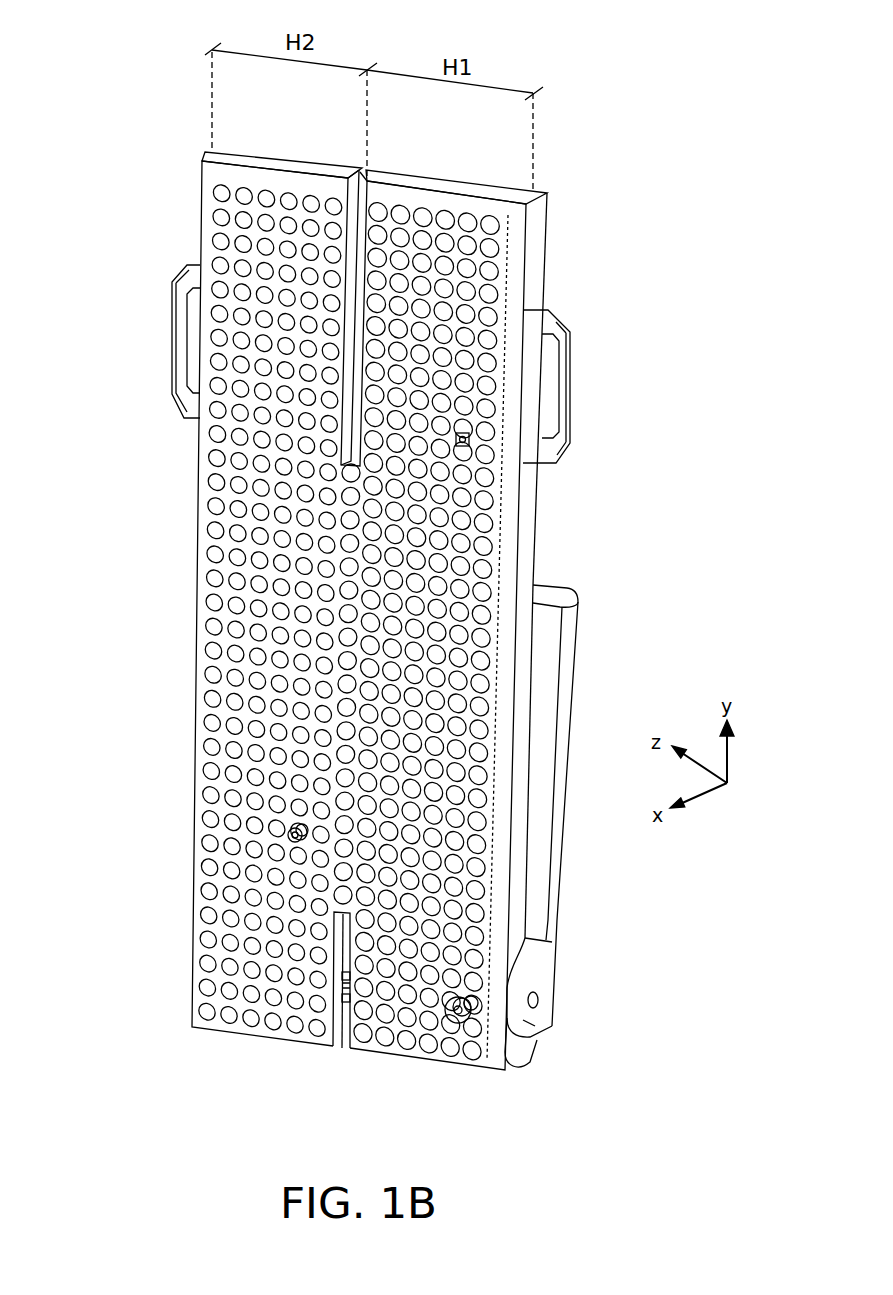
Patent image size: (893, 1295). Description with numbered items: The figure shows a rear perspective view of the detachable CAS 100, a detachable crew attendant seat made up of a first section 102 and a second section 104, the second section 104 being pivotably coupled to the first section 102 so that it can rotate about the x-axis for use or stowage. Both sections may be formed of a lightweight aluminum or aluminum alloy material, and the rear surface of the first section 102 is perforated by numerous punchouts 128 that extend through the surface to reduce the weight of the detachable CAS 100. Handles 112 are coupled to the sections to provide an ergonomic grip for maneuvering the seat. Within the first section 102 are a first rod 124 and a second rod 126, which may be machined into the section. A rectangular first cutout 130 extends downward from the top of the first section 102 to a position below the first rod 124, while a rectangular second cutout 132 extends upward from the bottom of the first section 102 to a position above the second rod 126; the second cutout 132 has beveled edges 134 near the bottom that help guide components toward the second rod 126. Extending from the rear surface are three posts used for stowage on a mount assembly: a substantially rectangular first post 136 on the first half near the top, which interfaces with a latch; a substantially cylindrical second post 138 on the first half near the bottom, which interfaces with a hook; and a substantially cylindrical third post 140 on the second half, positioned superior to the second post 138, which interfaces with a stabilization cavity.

The detachable CAS 100 is at (156, 116).
The first section 102 is at (205, 530).
The second section 104 is at (566, 704).
The handles 112 is at (176, 272).
The first rod 124 is at (362, 350).
The second rod 126 is at (344, 990).
The punchouts 128 is at (213, 650).
The first cutout 130 is at (366, 174).
The second cutout 132 is at (333, 1040).
The beveled edges 134 is at (336, 1030).
The first post 136 is at (469, 441).
The second post 138 is at (468, 1018).
The third post 140 is at (289, 838).